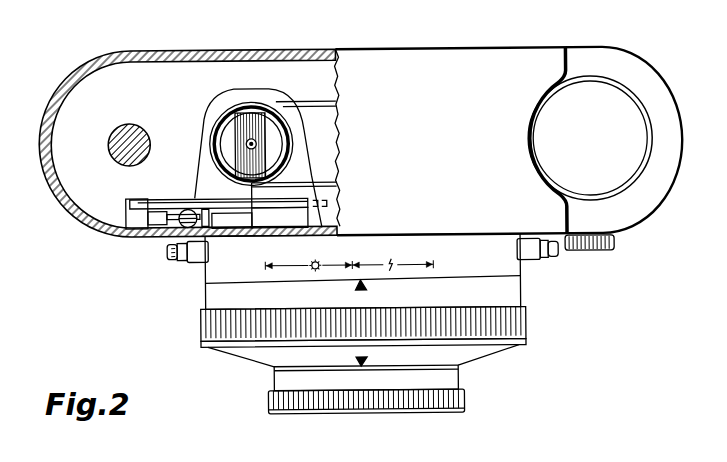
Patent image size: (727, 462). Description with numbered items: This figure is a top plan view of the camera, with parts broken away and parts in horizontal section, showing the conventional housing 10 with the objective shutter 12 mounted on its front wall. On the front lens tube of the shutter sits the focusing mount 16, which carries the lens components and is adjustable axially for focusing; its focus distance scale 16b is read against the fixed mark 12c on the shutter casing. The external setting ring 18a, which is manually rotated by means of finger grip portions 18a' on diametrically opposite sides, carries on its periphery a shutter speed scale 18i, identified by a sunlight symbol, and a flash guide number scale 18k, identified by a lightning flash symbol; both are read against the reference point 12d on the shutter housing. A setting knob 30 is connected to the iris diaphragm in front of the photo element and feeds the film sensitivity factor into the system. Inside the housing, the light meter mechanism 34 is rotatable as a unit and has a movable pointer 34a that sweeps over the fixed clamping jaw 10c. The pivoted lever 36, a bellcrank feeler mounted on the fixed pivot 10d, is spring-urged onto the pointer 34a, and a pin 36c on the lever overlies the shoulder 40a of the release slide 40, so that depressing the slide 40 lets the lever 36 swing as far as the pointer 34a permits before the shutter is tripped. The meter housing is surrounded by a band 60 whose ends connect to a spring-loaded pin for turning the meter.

The housing 10 is at (452, 53).
The fixed clamping jaw 10c is at (303, 170).
The fixed pivot 10d is at (135, 239).
The objective shutter 12 is at (207, 288).
The fixed mark 12c is at (369, 361).
The reference point 12d is at (368, 286).
The focusing mount 16 is at (466, 404).
The focus distance scale 16b is at (332, 376).
The external setting ring 18a is at (550, 273).
The finger grip portions 18a' is at (367, 270).
The shutter speed scale 18i is at (263, 251).
The flash guide number scale 18k is at (438, 236).
The setting knob 30 is at (615, 245).
The light meter mechanism 34 is at (275, 108).
The movable pointer 34a is at (256, 216).
The pivoted lever 36 is at (135, 198).
The pin 36c is at (214, 237).
The release slide 40 is at (185, 210).
The shoulder 40a is at (207, 208).
The band 60 is at (323, 102).